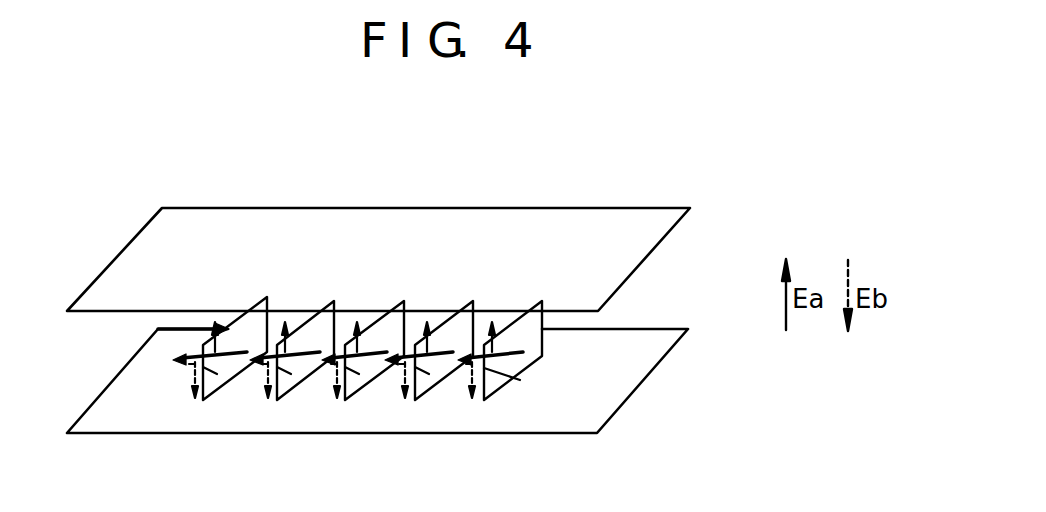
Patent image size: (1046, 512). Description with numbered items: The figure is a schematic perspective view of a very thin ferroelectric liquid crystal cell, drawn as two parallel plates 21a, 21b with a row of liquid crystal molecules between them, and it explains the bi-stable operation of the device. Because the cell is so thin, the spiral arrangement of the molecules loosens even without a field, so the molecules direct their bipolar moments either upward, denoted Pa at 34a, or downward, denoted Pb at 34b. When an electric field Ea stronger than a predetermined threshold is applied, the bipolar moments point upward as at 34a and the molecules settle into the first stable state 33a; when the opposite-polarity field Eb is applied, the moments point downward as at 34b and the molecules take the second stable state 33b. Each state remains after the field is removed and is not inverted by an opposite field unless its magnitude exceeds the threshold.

The upper substrate 21a is at (632, 208).
The lower substrate 21b is at (638, 370).
The first stable state 33a is at (240, 345).
The second stable state 33b is at (213, 382).
The upward bipolar moment orientation (Pa) 34a is at (228, 325).
The downward bipolar moment orientation (Pb) 34b is at (192, 372).